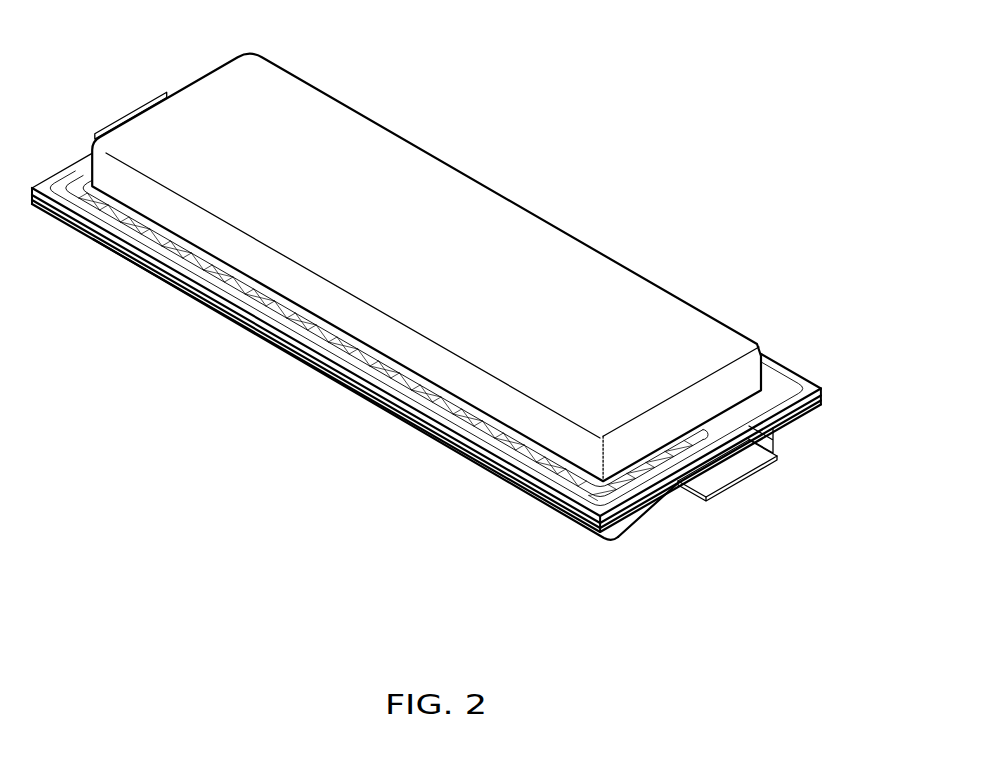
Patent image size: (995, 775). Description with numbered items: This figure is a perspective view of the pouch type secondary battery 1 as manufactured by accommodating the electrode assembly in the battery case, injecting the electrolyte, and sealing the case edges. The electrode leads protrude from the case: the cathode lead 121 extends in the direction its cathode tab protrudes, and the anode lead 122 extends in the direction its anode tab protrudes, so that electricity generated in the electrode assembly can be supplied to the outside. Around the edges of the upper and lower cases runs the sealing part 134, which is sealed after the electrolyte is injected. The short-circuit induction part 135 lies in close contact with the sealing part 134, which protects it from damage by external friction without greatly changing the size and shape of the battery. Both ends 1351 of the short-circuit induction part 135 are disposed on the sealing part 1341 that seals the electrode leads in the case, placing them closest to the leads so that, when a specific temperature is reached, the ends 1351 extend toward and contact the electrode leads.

The secondary battery 1 is at (541, 70).
The cathode lead 121 is at (733, 463).
The anode lead 122 is at (131, 113).
The sealing part 134 is at (338, 358).
The sealing part 1341 is at (775, 452).
The short-circuit induction part 135 is at (510, 466).
The ends 1351 is at (680, 472).